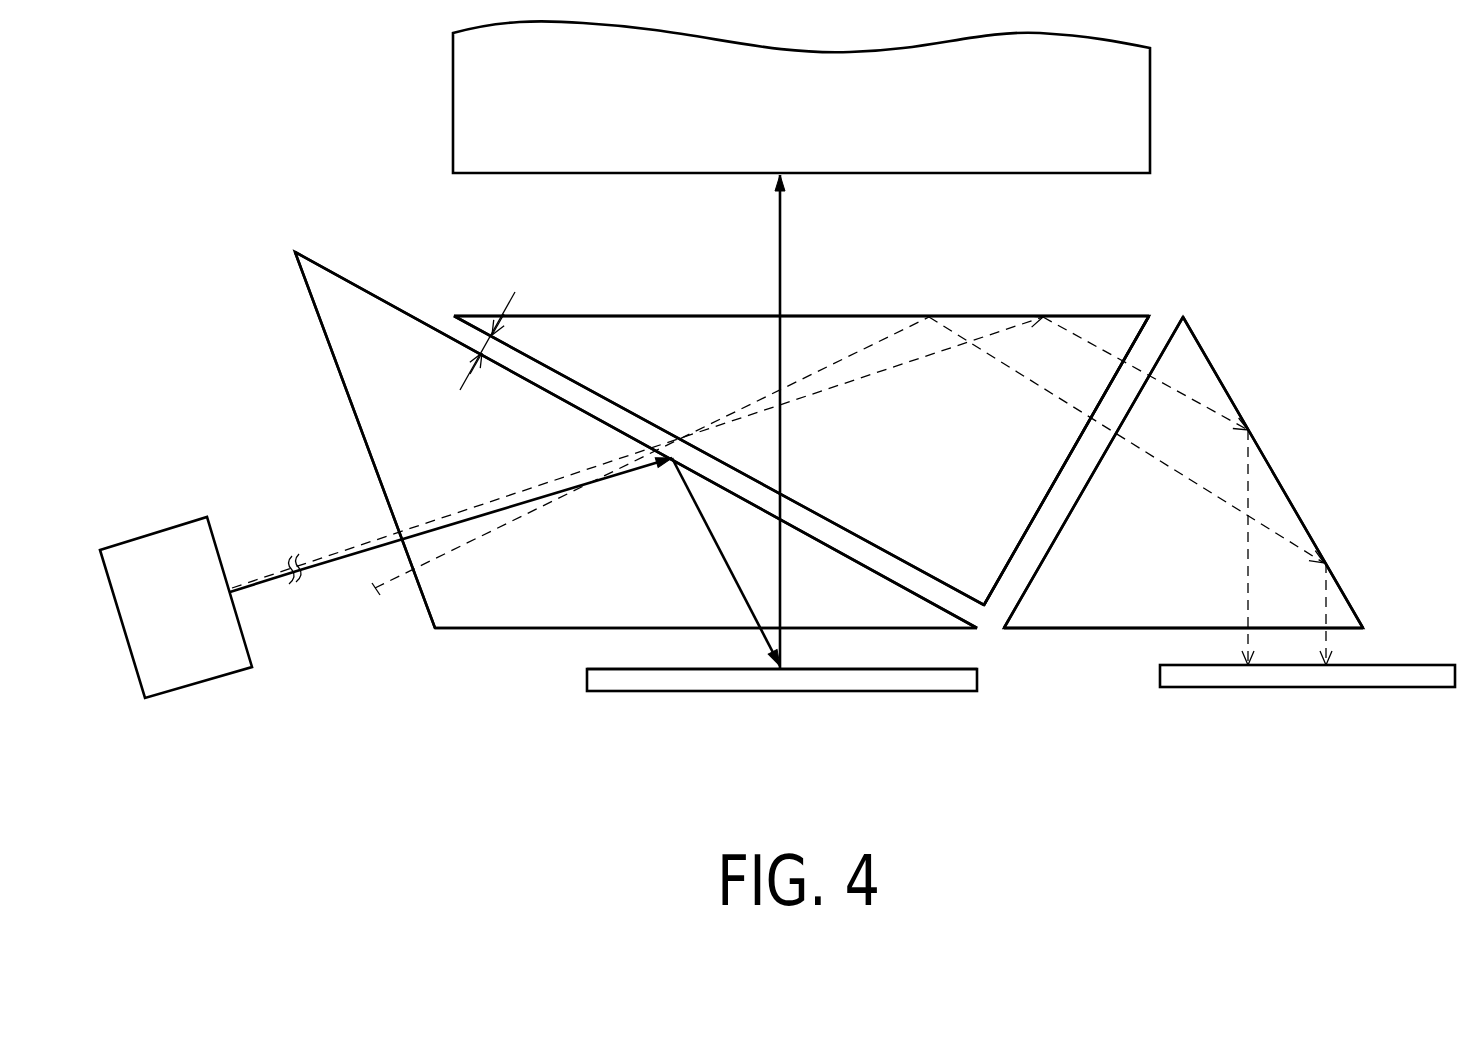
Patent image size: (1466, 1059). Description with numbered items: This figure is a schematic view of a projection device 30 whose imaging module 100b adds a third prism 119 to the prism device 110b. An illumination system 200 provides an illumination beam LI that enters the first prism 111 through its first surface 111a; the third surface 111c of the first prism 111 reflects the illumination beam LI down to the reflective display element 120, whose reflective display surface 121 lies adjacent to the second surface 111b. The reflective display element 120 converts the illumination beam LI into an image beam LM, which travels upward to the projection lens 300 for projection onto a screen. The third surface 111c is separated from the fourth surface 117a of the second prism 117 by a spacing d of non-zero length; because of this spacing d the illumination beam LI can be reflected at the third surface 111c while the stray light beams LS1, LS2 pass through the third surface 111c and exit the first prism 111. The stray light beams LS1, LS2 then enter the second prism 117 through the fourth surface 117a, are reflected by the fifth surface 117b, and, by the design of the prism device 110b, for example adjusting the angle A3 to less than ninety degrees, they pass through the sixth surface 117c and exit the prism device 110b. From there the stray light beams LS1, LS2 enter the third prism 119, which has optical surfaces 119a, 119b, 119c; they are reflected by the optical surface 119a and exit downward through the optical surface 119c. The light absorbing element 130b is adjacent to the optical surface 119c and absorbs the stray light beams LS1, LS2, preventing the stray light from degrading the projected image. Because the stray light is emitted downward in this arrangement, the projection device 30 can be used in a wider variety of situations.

The projection device 30 is at (258, 114).
The projection lens 300 is at (1123, 105).
The first prism 111 is at (485, 632).
The first surface 111a is at (313, 300).
The second surface 111b is at (548, 632).
The third surface 111c is at (393, 305).
The second prism 117 is at (575, 316).
The fourth surface 117a is at (861, 542).
The fifth surface 117b is at (721, 318).
The sixth surface 117c is at (1003, 578).
The prism device 110b is at (1030, 312).
The angle A3 is at (1136, 340).
The spacing d is at (475, 337).
The third prism 119 is at (1275, 473).
The optical surface 119a is at (1290, 501).
The optical surface 119b is at (1164, 350).
The optical surface 119c is at (1094, 622).
The imaging module 100b is at (1132, 662).
The reflective display element 120 is at (672, 682).
The reflective display surface 121 is at (891, 669).
The light absorbing element 130b is at (1418, 677).
The illumination system 200 is at (158, 562).
The image beam LM is at (783, 290).
The illumination beam LI is at (272, 592).
The stray light beam LS1 is at (377, 594).
The stray light beam LS2 is at (343, 548).